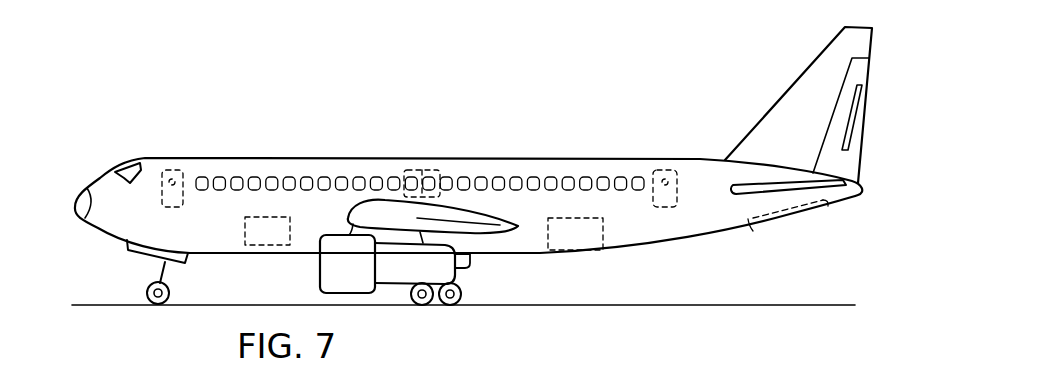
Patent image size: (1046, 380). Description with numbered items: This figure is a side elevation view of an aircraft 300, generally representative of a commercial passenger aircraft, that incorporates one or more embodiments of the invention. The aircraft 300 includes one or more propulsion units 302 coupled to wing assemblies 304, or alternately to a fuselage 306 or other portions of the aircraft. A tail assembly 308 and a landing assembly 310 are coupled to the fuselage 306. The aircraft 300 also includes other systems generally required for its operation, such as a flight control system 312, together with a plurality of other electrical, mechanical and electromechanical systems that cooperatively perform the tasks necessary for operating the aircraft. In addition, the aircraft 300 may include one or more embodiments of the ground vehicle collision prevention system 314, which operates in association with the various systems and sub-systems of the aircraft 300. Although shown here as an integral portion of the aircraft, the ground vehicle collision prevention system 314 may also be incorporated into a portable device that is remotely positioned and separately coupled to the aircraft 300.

The aircraft 300 is at (373, 84).
The propulsion unit 302 is at (318, 272).
The wing assembly 304 is at (488, 237).
The fuselage 306 is at (267, 158).
The tail assembly 308 is at (862, 173).
The landing assembly 310 is at (147, 291).
The flight control system 312 is at (102, 190).
The ground vehicle collision prevention system 314 is at (677, 240).